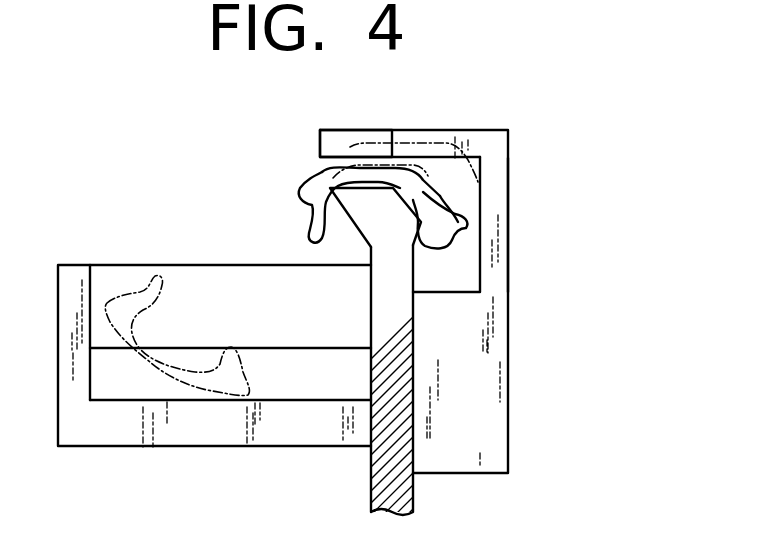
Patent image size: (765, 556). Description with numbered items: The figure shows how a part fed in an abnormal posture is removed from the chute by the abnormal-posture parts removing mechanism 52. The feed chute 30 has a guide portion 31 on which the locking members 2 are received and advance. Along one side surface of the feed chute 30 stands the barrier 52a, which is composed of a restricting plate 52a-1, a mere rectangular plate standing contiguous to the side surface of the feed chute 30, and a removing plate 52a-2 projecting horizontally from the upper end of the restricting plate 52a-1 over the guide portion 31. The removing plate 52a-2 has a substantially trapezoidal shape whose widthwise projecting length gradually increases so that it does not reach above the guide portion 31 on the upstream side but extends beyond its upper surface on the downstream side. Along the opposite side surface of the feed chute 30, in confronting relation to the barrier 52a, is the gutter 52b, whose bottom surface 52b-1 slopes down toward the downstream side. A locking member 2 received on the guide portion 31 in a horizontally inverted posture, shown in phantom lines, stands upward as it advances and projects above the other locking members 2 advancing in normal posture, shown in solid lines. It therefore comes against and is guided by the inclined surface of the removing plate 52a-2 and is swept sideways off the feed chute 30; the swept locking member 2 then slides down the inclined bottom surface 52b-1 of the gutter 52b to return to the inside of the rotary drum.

The locking member 2 is at (300, 183).
The feed chute 30 is at (413, 400).
The guide portion 31 is at (413, 186).
The abnormal-posture parts removing mechanism 52 is at (155, 156).
The barrier 52a is at (480, 131).
The restricting plate 52a-1 is at (497, 253).
The removing plate 52a-2 is at (343, 138).
The gutter 52b is at (62, 265).
The bottom surface 52b-1 is at (303, 380).